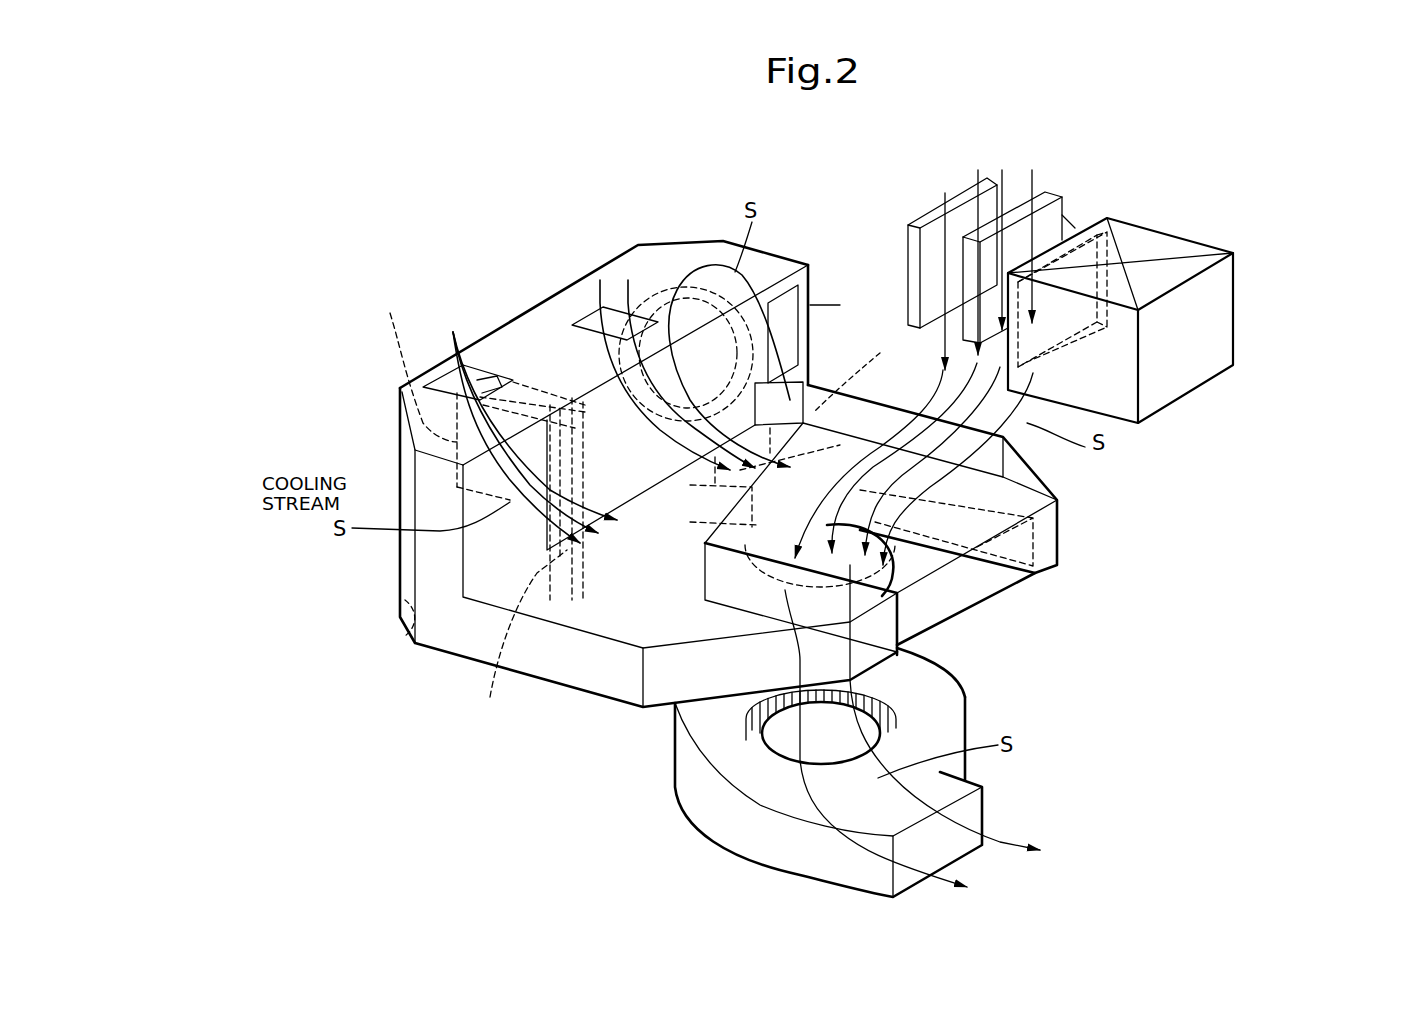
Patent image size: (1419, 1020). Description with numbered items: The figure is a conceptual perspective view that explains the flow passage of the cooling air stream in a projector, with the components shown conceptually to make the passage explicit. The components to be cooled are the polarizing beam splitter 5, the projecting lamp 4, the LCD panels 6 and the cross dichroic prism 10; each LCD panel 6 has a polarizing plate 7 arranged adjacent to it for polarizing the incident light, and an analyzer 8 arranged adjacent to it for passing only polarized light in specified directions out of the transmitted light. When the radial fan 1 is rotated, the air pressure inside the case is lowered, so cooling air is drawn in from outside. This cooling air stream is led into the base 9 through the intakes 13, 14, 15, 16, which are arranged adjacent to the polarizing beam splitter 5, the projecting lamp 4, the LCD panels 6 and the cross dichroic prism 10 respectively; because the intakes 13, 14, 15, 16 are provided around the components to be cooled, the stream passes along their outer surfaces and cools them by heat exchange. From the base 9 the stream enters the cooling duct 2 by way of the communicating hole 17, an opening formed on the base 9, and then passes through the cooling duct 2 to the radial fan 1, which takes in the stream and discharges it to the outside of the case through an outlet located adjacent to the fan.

The radial fan 1 is at (730, 833).
The cooling duct 2 is at (648, 499).
The projecting lamp 4 is at (675, 287).
The polarizing beam splitter 5 is at (400, 325).
The LCD panel 6 is at (1068, 222).
The polarizing plate 7 is at (908, 222).
The analyzer 8 is at (1092, 237).
The base 9 is at (1043, 473).
The cross dichroic prism 10 is at (1223, 322).
The intake 13 is at (440, 380).
The intake 14 is at (593, 307).
The intake 15 is at (785, 332).
The intake 16 is at (1070, 222).
The communicating hole 17 is at (405, 612).